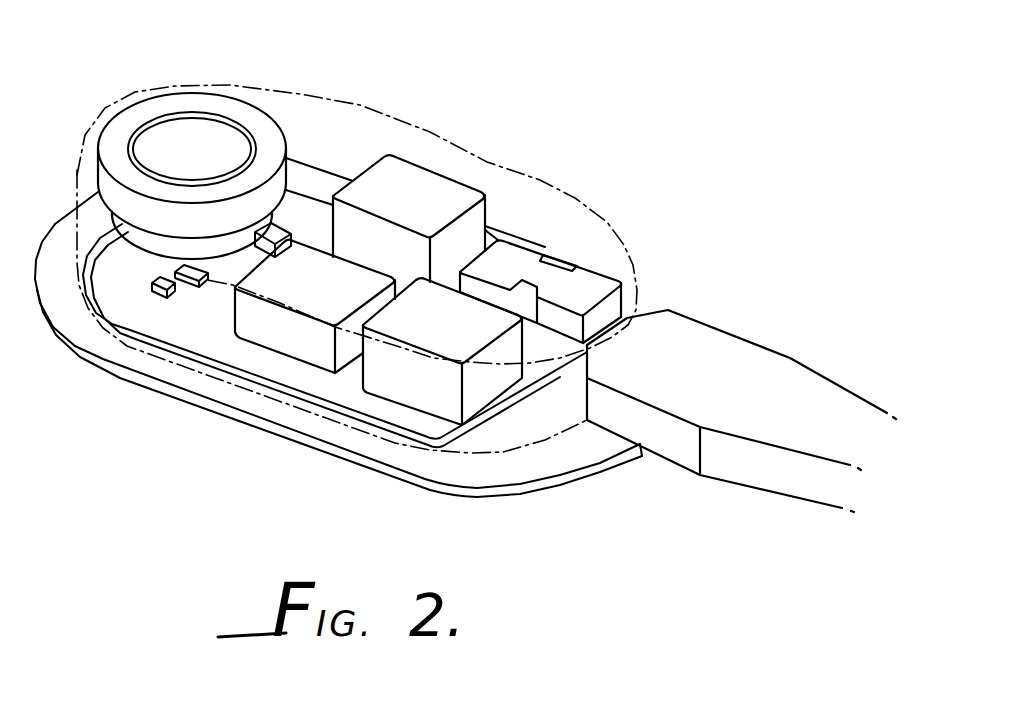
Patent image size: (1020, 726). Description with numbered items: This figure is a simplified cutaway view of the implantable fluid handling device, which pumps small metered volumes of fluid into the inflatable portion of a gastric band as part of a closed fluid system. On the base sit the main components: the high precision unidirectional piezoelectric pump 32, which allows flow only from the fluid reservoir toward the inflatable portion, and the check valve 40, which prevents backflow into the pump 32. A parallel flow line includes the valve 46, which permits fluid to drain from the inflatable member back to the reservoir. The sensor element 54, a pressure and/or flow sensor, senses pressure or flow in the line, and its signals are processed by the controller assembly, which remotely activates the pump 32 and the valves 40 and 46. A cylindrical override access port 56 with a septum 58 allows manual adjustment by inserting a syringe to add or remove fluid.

The piezoelectric pump 32 is at (318, 303).
The check valve 40 is at (411, 211).
The valve 46 is at (456, 346).
The sensor element 54 is at (610, 288).
The override access port 56 is at (250, 106).
The septum 58 is at (180, 125).